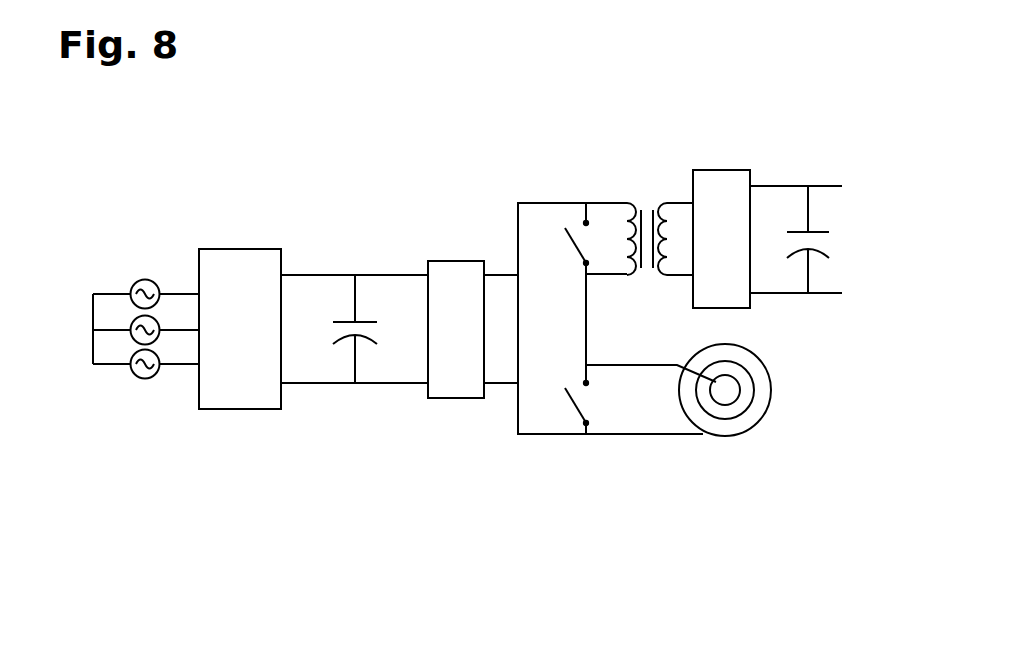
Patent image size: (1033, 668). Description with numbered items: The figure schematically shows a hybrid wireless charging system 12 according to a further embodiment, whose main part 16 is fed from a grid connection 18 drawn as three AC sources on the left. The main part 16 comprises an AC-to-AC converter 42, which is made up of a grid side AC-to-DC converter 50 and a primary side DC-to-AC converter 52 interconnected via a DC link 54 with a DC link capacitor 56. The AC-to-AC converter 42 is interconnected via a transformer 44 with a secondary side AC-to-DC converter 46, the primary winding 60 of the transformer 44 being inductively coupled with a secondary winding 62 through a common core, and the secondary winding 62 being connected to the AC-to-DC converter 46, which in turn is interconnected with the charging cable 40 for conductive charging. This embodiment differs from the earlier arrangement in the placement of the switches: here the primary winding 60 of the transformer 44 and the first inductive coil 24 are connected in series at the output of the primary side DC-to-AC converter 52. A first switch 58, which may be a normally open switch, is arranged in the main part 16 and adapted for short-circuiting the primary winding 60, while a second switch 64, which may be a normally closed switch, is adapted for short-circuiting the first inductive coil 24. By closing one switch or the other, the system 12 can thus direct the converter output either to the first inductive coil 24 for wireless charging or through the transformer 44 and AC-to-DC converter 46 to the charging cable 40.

The wireless charging system 12 is at (848, 132).
The main part 16 is at (197, 170).
The three-phase mains supply 18 is at (93, 310).
The first inductive coil 24 is at (722, 443).
The charging cable 40 is at (860, 218).
The AC-to-AC converter 42 is at (347, 188).
The transformer 44 is at (650, 194).
The secondary side AC-to-DC converter 46 is at (723, 170).
The grid side AC-to-DC converter 50 is at (242, 249).
The primary side DC-to-AC converter 52 is at (458, 261).
The DC link 54 is at (362, 258).
The DC link capacitor 56 is at (345, 344).
The first switch 58 is at (573, 224).
The primary winding 60 is at (633, 203).
The secondary winding 62 is at (660, 203).
The second switch 64 is at (568, 414).